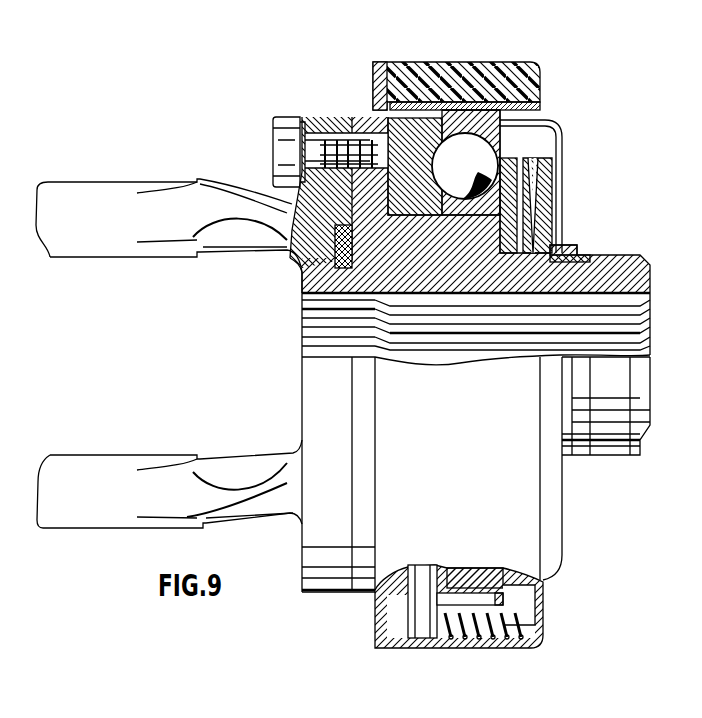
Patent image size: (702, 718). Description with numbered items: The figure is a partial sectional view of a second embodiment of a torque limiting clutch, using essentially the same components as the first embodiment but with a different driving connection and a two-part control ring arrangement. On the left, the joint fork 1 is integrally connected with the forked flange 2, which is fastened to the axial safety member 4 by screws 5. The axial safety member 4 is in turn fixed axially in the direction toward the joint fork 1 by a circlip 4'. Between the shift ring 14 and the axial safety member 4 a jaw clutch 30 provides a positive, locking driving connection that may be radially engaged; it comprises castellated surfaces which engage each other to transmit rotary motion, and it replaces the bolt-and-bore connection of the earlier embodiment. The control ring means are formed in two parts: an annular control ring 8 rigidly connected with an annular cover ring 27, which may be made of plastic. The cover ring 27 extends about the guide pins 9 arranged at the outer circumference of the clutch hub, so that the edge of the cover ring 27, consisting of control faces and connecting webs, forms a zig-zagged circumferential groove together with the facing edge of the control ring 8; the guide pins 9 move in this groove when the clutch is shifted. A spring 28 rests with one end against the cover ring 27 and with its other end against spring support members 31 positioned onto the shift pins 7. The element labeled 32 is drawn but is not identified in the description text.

The joint fork 1 is at (86, 195).
The forked flange 2 is at (300, 206).
The axial safety member 4 is at (476, 354).
The circlip 4' is at (270, 287).
The screws 5 is at (283, 158).
The jaw clutch 30 is at (376, 130).
The control ring 8 is at (373, 74).
The shift ring 14 is at (405, 128).
The cover ring 27 is at (455, 75).
The guide pins 9 is at (481, 115).
The cover shell 32 is at (556, 125).
The spring support members 31 is at (390, 640).
The shift pins 7 is at (413, 628).
The spring 28 is at (471, 630).